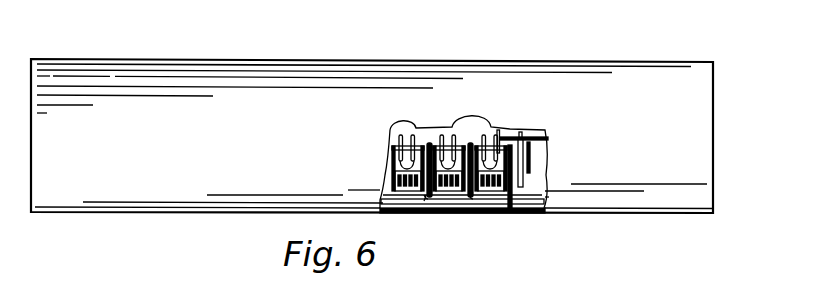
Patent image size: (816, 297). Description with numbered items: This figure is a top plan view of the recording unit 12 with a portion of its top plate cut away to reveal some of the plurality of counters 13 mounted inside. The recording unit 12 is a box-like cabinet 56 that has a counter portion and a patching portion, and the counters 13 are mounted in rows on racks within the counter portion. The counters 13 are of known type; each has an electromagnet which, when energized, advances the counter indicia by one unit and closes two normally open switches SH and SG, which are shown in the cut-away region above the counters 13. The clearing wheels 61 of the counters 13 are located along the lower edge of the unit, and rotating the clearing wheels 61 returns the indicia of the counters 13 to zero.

The recording unit 12 is at (99, 220).
The box-like cabinet 56 is at (231, 200).
The counters 13 is at (462, 128).
The normally open switch SH is at (403, 129).
The normally open switch SG is at (410, 129).
The clearing wheels 61 is at (426, 215).